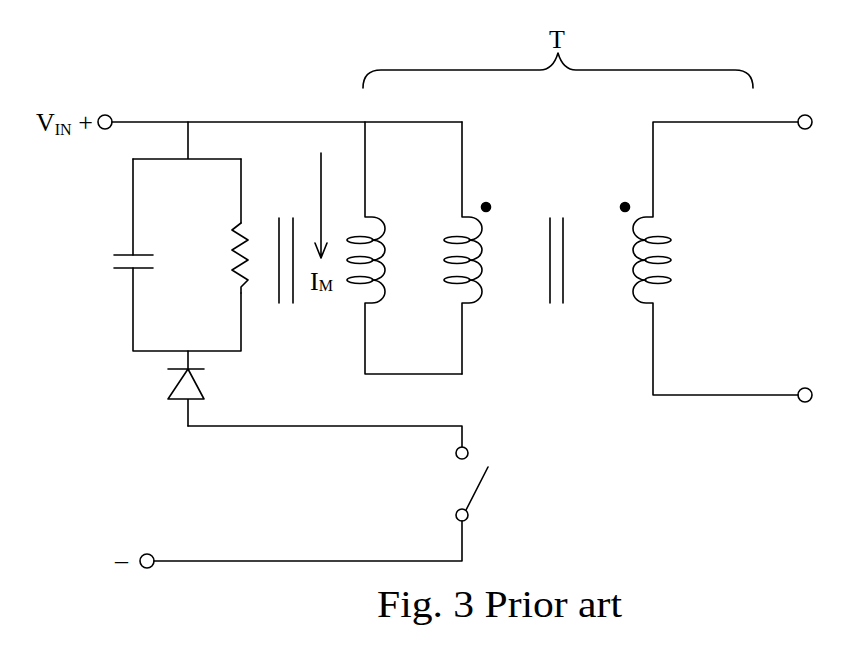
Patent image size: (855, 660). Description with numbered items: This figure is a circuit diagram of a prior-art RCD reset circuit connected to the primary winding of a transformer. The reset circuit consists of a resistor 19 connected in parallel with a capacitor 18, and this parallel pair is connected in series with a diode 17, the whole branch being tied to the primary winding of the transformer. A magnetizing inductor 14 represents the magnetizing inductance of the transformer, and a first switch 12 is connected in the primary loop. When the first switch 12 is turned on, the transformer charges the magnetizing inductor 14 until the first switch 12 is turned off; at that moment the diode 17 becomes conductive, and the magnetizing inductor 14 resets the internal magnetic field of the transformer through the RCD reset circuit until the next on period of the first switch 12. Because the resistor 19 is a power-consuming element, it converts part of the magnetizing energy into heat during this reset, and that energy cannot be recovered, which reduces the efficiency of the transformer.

The first switch 12 is at (479, 488).
The magnetizing inductor 14 is at (383, 217).
The diode 17 is at (179, 388).
The capacitor 18 is at (114, 258).
The resistor 19 is at (243, 222).